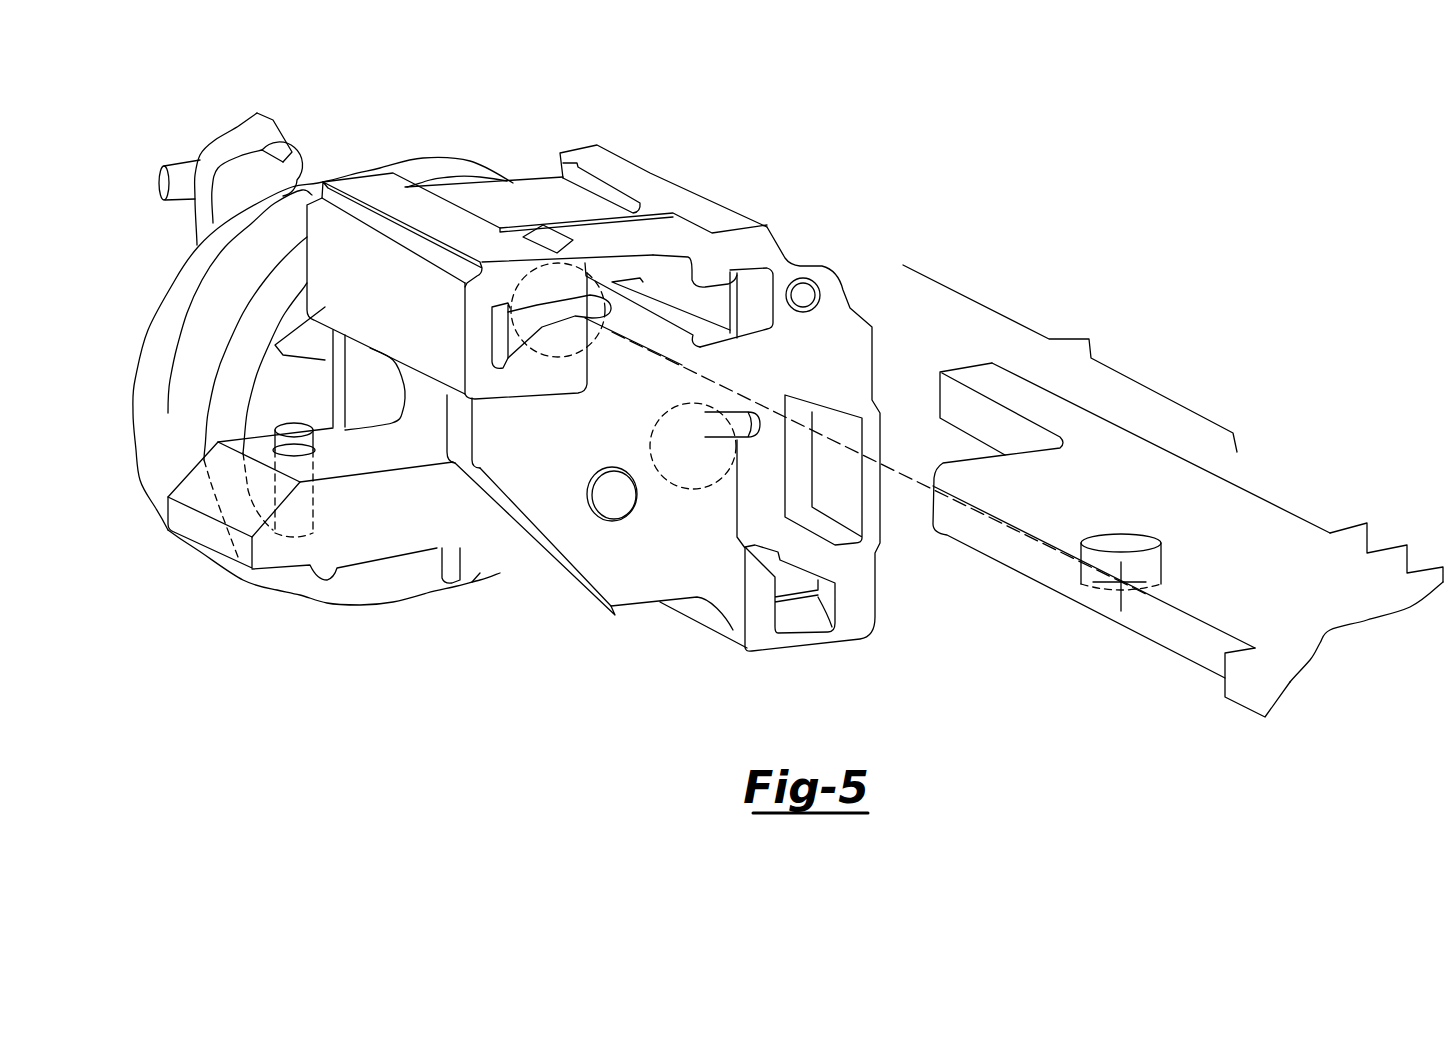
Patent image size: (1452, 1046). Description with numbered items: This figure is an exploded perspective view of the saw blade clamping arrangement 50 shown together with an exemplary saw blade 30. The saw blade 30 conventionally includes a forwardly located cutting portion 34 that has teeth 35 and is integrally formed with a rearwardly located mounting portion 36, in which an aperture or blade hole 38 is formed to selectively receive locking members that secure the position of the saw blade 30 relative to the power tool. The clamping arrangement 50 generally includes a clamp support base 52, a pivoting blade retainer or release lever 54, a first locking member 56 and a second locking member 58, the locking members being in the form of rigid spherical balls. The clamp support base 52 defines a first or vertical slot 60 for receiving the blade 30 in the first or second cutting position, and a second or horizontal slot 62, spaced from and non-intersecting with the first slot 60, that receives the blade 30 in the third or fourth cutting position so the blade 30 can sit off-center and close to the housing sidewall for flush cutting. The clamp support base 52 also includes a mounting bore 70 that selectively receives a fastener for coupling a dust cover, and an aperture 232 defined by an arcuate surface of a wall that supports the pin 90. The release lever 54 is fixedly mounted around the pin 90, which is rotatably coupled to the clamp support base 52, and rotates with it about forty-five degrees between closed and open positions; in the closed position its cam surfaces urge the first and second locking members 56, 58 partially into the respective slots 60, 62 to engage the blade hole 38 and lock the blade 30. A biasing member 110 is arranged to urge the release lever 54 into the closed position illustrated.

The biasing member 110 is at (175, 307).
The release lever 54 is at (207, 527).
The clamp support base 52 is at (650, 217).
The second slot 62 is at (693, 297).
The mounting bore 70 is at (803, 295).
The second locking member 58 is at (594, 357).
The first locking member 56 is at (715, 490).
The pin 90 is at (607, 510).
The aperture 232 is at (605, 520).
The first slot 60 is at (805, 572).
The clamping arrangement 50 is at (462, 678).
The mounting portion 36 is at (1243, 487).
The saw blade 30 is at (1287, 527).
The teeth 35 is at (1367, 540).
The cutting portion 34 is at (1415, 583).
The aperture 38 is at (1105, 512).